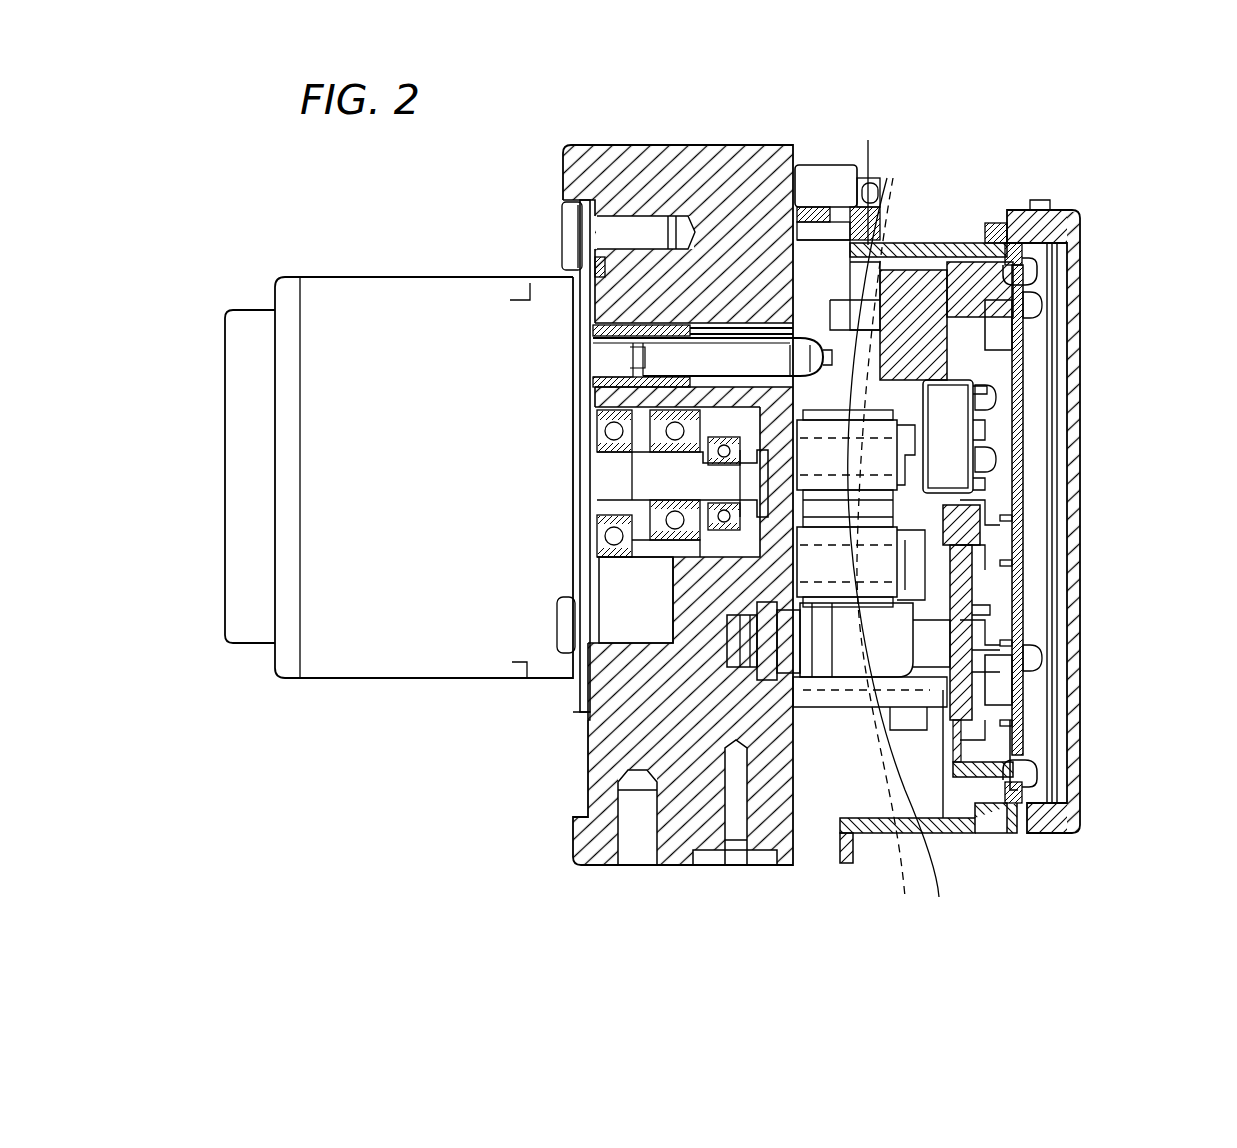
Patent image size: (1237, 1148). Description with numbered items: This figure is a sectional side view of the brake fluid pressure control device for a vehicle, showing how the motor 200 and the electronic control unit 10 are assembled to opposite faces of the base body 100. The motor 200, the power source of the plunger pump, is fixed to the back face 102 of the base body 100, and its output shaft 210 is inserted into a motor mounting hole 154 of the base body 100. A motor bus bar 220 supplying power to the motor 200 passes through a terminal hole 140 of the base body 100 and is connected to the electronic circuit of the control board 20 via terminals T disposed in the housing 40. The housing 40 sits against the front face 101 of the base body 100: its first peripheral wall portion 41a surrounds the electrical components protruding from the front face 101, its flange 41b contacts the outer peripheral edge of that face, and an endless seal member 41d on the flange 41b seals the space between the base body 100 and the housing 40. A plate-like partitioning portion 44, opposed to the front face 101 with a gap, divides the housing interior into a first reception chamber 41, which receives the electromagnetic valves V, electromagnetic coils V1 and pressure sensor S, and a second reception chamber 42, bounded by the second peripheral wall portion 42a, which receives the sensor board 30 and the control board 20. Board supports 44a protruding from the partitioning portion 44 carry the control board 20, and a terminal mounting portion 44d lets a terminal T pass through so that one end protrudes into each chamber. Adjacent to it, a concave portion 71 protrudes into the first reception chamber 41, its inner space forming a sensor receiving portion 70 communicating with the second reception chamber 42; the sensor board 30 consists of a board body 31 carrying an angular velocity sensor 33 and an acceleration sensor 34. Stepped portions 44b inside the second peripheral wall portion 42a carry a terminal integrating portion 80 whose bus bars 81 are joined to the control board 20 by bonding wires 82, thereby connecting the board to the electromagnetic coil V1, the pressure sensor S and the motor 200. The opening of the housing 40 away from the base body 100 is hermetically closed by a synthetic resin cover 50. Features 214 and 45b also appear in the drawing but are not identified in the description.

The electronic control unit 10 is at (992, 889).
The control board 20 is at (1024, 562).
The sensor board 30 is at (985, 433).
The board body 31 is at (985, 480).
The angular velocity sensor 33 is at (1082, 424).
The acceleration sensor 34 is at (975, 405).
The housing 40 is at (975, 243).
The first reception chamber 41 is at (950, 663).
The first peripheral wall portion 41a is at (935, 262).
The flange 41b is at (807, 165).
The seal member 41d is at (813, 200).
The second reception chamber 42 is at (1000, 590).
The second peripheral wall portion 42a is at (1000, 228).
The partitioning portion 44 is at (1005, 528).
The board supports 44a is at (995, 327).
The stepped portions 44b is at (1035, 210).
The terminal mounting portion 44d is at (871, 177).
The terminal 45b is at (967, 727).
The cover 50 is at (1072, 815).
The sensor receiving portion 70 is at (1056, 423).
The concave portion 71 is at (987, 378).
The terminal integrating portion 80 is at (1027, 250).
The bus bars 81 is at (1023, 793).
The bonding wires 82 is at (1025, 281).
The base body 100 is at (590, 868).
The front face 101 is at (800, 700).
The back face 102 is at (587, 780).
The terminal hole 140 is at (720, 348).
The motor mounting hole 154 is at (677, 548).
The motor 200 is at (388, 683).
The output shaft 210 is at (605, 430).
The flange plate 214 is at (588, 697).
The motor bus bar 220 is at (753, 347).
The pressure sensor S is at (870, 590).
The terminal T is at (790, 345).
The electromagnetic valve V is at (900, 534).
The electromagnetic coil V1 is at (899, 533).